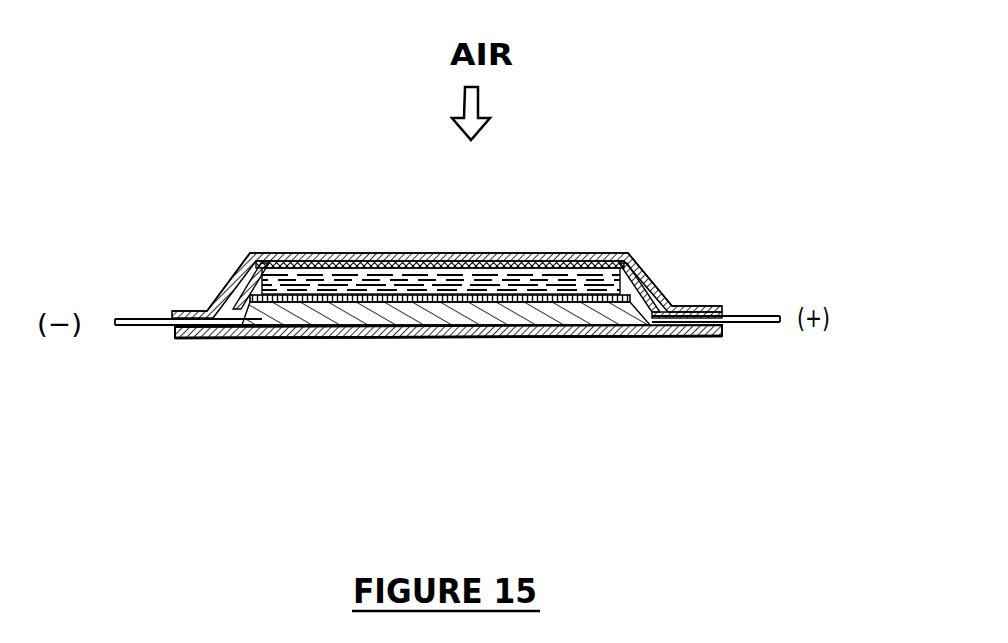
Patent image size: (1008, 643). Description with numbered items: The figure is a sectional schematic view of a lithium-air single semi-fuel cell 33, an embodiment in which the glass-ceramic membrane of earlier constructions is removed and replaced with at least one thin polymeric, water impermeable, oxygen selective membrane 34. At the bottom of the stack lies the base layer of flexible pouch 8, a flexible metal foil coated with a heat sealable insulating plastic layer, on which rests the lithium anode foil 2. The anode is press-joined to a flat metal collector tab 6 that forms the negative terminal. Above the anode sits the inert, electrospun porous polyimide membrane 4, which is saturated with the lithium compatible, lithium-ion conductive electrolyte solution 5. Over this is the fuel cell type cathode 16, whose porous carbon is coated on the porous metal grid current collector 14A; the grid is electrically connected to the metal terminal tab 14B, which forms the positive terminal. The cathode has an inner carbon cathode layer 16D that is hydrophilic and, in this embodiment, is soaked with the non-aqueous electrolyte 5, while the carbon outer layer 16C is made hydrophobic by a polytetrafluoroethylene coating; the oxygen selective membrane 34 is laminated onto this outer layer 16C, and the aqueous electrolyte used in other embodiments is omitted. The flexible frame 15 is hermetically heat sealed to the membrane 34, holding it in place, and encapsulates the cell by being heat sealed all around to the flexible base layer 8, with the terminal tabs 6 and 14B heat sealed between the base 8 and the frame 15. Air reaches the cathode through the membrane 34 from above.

The lithium-air single semi-fuel cell 33 is at (750, 437).
The porous metal grid current collector 14A is at (446, 262).
The metal terminal tab (+) 14B is at (745, 314).
The flexible frame 15 is at (268, 256).
The oxygen selective membrane 34 is at (373, 258).
The cathode 16 is at (490, 284).
The carbon outer layer 16C is at (550, 272).
The inner carbon cathode layer 16D is at (390, 292).
The electrospun porous polyimide membrane 4 is at (447, 303).
The electrolyte solution 5 is at (446, 395).
The lithium anode foil 2 is at (523, 314).
The base layer of flexible pouch 8 is at (260, 339).
The flat metal collector tab (−) 6 is at (137, 318).